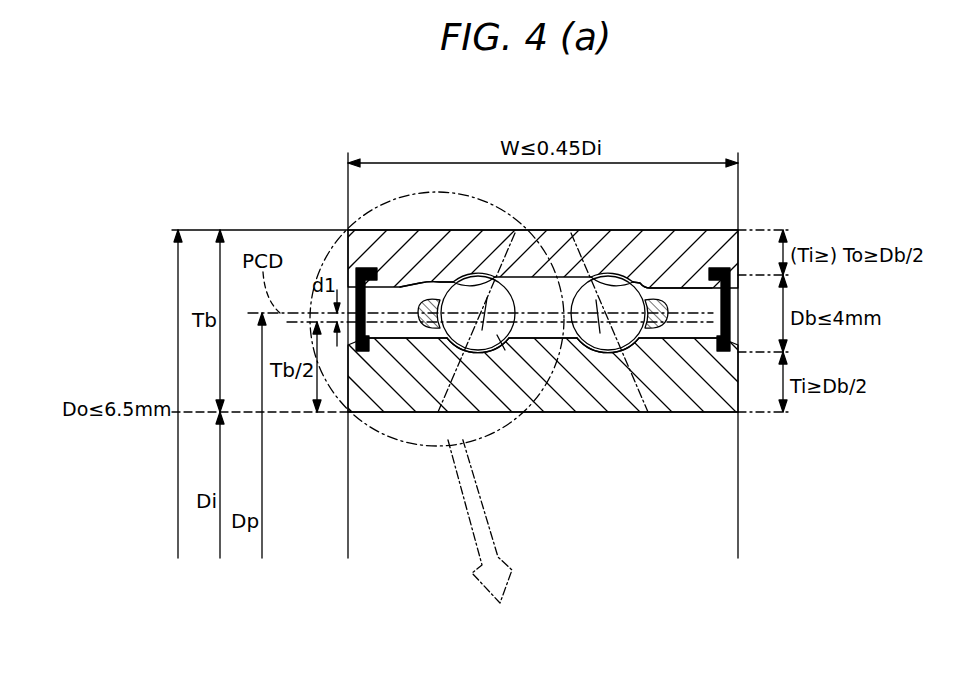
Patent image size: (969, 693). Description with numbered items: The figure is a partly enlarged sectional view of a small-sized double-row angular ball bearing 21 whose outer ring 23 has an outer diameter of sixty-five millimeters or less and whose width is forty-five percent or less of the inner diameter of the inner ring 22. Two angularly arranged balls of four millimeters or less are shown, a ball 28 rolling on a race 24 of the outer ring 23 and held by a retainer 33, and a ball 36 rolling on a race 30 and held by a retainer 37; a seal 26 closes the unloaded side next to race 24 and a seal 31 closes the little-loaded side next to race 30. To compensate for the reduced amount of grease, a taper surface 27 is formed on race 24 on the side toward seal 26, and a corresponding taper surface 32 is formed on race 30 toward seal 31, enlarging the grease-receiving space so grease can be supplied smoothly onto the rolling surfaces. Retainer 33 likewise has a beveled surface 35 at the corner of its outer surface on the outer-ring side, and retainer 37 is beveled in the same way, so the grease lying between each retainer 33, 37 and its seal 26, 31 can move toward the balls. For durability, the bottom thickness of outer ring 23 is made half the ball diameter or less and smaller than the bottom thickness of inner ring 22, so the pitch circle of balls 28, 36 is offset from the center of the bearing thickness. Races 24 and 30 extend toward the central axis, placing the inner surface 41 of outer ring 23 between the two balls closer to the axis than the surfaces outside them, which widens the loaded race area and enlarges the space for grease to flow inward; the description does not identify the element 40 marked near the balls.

The bearing 21 is at (760, 195).
The inner ring 22 is at (697, 387).
The outer ring 23 is at (565, 255).
The race 24 is at (463, 270).
The seal 26 is at (372, 305).
The taper surface 27 is at (452, 262).
The ball 28 is at (482, 341).
The race 30 is at (630, 276).
The seal 31 is at (706, 322).
The taper surface 32 is at (655, 262).
The retainer 33 is at (431, 332).
The beveled surface 35 is at (425, 298).
The ball 36 is at (594, 332).
The retainer 37 is at (633, 365).
The balls (rolling elements) 40 is at (503, 350).
The inner surface 41 is at (556, 341).